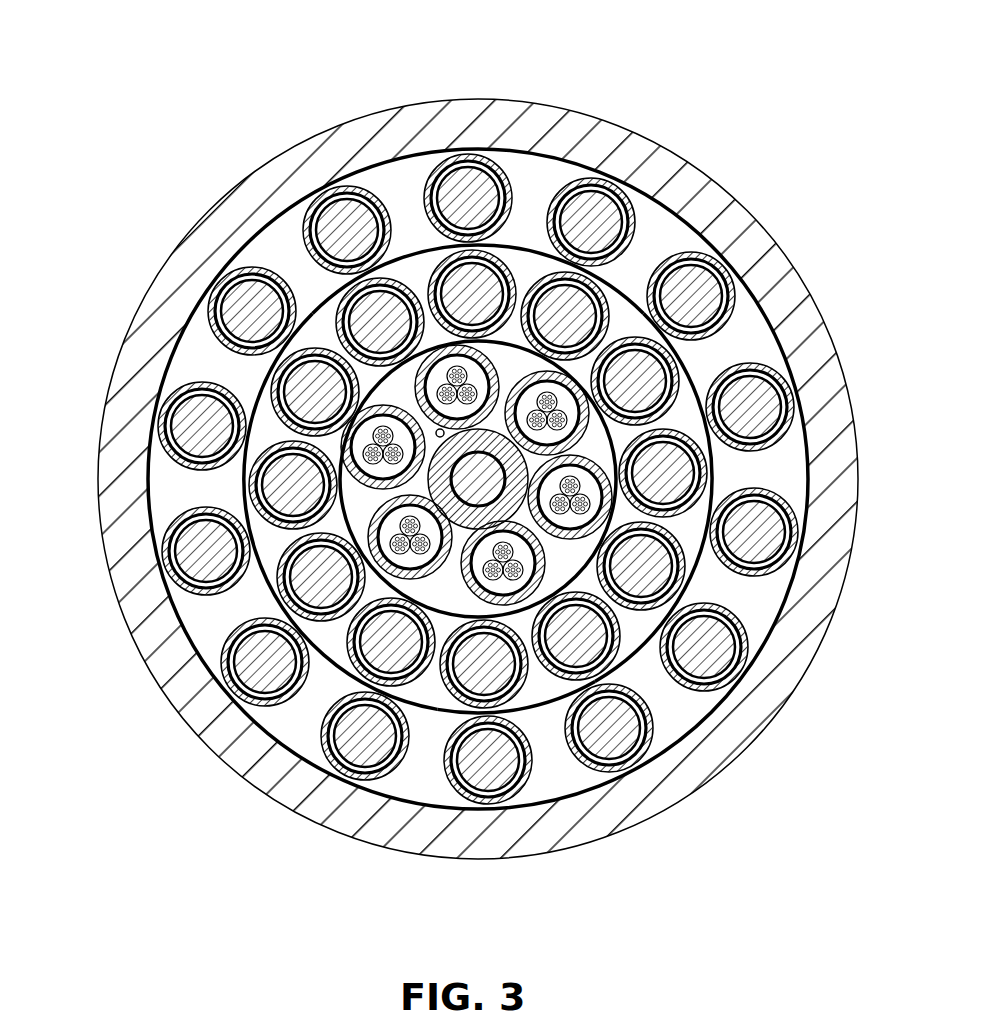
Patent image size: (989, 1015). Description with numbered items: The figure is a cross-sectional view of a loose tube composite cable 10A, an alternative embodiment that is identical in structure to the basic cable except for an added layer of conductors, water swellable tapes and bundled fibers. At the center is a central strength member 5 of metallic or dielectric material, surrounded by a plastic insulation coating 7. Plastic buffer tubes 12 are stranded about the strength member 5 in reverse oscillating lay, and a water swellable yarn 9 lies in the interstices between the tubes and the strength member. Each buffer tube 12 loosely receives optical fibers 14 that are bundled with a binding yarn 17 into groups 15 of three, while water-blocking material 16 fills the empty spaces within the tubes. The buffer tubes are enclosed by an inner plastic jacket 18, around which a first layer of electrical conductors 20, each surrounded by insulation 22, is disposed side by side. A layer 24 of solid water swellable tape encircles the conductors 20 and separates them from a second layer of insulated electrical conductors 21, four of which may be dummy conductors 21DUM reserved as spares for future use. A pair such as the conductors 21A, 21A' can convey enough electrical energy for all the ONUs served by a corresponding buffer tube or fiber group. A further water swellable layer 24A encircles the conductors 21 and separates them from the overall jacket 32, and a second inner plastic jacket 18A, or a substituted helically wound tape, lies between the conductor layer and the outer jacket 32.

The loose tube composite cable 10A is at (529, 86).
The central strength member 5 is at (543, 545).
The plastic insulation coating 7 is at (467, 520).
The water swellable yarn 9 is at (420, 407).
The buffer tube 12 is at (677, 580).
The optical fibers 14 is at (540, 387).
The bundled groups 15 is at (583, 425).
The water-blocking material 16 is at (595, 392).
The binding yarn 17 is at (590, 272).
The inner plastic jacket 18 is at (607, 510).
The second inner plastic jacket 18A is at (637, 647).
The electrical conductors 20 is at (435, 680).
The insulated electrical conductors 21 is at (727, 650).
The dummy conductors 21DUM is at (690, 828).
The electrical conductor 21A is at (140, 391).
The electrical conductor 21A' is at (132, 514).
The insulation 22 is at (303, 803).
The layer of solid water swellable material 24 is at (343, 670).
The layer of solid water swellable material 24A is at (147, 652).
The overall jacket 32 is at (590, 827).